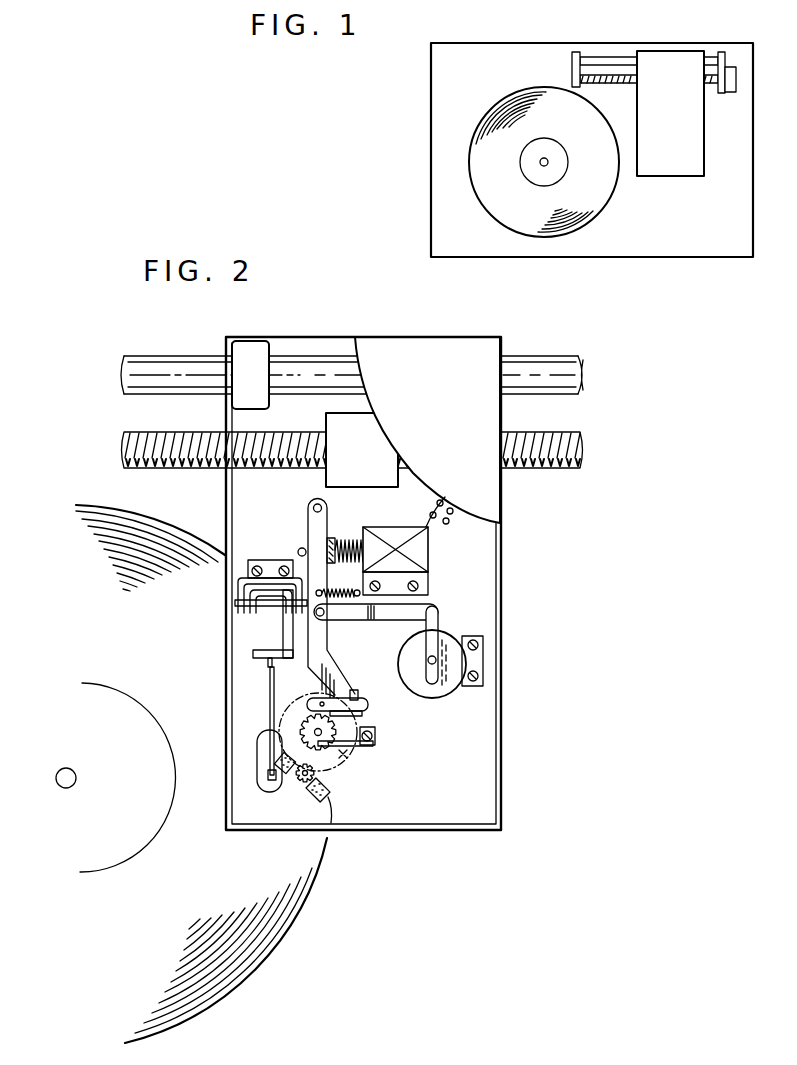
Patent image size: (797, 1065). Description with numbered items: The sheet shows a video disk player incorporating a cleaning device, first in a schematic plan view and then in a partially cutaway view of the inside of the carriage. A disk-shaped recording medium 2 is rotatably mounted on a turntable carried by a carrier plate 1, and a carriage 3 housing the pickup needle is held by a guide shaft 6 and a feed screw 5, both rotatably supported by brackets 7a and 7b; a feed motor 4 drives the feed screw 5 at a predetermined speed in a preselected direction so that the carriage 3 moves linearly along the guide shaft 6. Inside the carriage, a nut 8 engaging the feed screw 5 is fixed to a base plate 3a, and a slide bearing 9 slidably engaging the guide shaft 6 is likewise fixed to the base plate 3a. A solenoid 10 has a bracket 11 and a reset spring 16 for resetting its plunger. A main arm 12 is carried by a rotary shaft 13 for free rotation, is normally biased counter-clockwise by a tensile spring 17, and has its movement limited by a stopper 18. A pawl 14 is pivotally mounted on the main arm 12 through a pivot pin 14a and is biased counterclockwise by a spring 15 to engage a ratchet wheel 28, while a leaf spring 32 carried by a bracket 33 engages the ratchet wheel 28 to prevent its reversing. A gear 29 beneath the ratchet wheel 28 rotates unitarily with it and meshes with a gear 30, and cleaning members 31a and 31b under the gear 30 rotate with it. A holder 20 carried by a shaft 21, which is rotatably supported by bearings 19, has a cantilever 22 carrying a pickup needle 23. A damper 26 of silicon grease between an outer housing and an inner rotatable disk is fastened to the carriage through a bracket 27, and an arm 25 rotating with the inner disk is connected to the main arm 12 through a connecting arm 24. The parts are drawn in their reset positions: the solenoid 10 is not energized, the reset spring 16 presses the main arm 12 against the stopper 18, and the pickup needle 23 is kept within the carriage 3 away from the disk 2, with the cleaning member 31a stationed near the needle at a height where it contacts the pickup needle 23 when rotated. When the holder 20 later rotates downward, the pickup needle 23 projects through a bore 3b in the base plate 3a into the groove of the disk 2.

In FIG. 1, the carrier plate 1 is at (482, 48).
In FIG. 1, the disk-shaped recording medium 2 is at (547, 232).
In FIG. 2, the disk-shaped recording medium 2 is at (293, 902).
In FIG. 1, the carriage 3 is at (665, 55).
In FIG. 2, the carriage 3 is at (449, 340).
In FIG. 2, the base plate 3a is at (483, 587).
In FIG. 2, the bore 3b is at (257, 752).
In FIG. 1, the feed motor 4 is at (737, 78).
In FIG. 1, the feed screw 5 is at (618, 85).
In FIG. 2, the feed screw 5 is at (530, 433).
In FIG. 1, the guide shaft 6 is at (605, 58).
In FIG. 2, the guide shaft 6 is at (530, 358).
In FIG. 1, the bracket 7a is at (725, 52).
In FIG. 1, the bracket 7b is at (572, 60).
In FIG. 2, the nut 8 is at (326, 418).
In FIG. 2, the slide member 9 is at (255, 345).
In FIG. 2, the solenoid 10 is at (394, 528).
In FIG. 2, the bracket 11 is at (428, 587).
In FIG. 2, the main arm 12 is at (338, 682).
In FIG. 2, the rotary shaft 13 is at (310, 503).
In FIG. 2, the pawl 14 is at (368, 706).
In FIG. 2, the pivot pin 14a is at (322, 700).
In FIG. 2, the spring 15 is at (360, 693).
In FIG. 2, the reset spring 16 is at (349, 538).
In FIG. 2, the tensile spring 17 is at (333, 591).
In FIG. 2, the stopper 18 is at (300, 550).
In FIG. 2, the bearings 19 is at (258, 562).
In FIG. 2, the holder 20 is at (283, 634).
In FIG. 2, the shaft 21 is at (238, 605).
In FIG. 2, the cantilever 22 is at (270, 722).
In FIG. 2, the pickup needle 23 is at (268, 776).
In FIG. 2, the connecting arm 24 is at (370, 621).
In FIG. 2, the arm 25 is at (438, 620).
In FIG. 2, the damper 26 is at (435, 700).
In FIG. 2, the bracket 27 is at (475, 688).
In FIG. 2, the ratchet wheel 28 is at (333, 746).
In FIG. 2, the gear 29 is at (331, 793).
In FIG. 2, the gear 30 is at (304, 783).
In FIG. 2, the cleaning member 31a is at (283, 772).
In FIG. 2, the cleaning member 31b is at (331, 823).
In FIG. 2, the leaf spring 32 is at (372, 747).
In FIG. 2, the bracket 33 is at (376, 740).